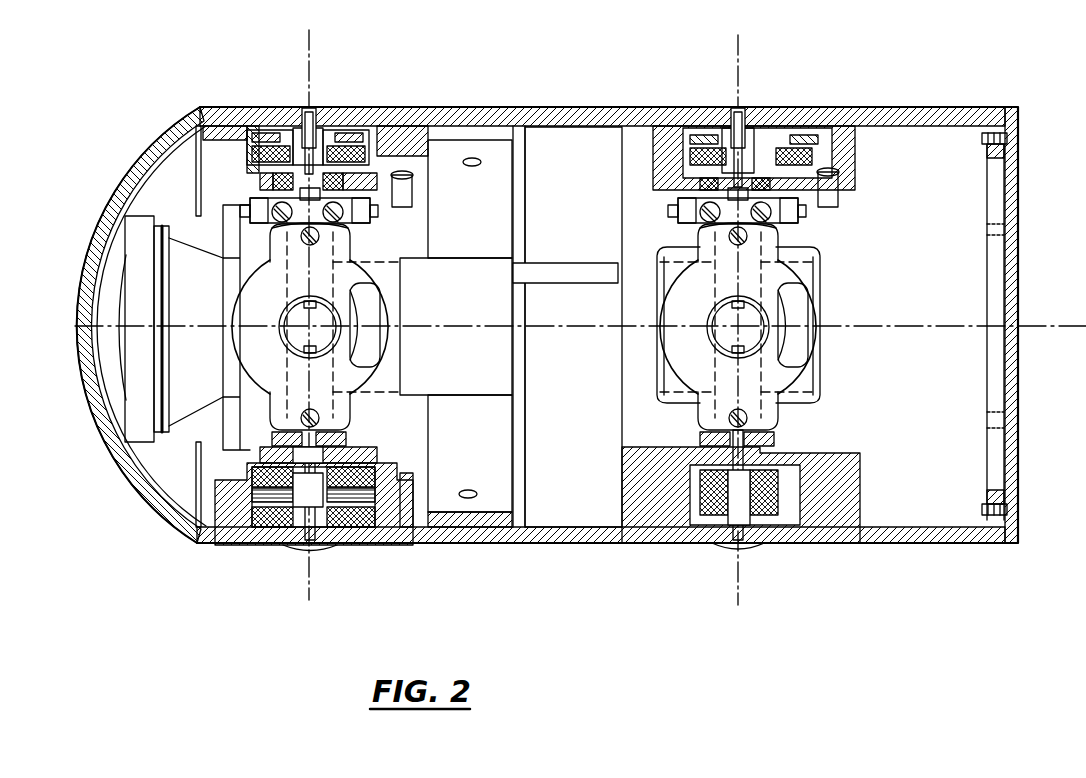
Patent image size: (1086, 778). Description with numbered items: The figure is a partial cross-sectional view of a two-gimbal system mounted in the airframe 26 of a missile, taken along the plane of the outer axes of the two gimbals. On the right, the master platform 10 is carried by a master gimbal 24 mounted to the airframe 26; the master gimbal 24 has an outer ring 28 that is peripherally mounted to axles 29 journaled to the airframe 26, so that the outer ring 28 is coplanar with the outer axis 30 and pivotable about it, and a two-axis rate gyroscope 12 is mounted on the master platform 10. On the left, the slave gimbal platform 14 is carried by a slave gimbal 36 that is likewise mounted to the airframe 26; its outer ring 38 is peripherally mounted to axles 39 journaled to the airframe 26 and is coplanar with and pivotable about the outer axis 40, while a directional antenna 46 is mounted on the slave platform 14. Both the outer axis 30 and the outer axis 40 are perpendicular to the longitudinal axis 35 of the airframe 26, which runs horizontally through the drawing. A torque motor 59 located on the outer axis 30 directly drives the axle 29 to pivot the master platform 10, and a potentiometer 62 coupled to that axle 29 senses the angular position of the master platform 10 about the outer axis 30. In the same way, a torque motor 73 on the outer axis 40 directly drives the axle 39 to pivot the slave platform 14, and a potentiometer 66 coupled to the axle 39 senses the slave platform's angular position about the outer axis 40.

The master platform 10 is at (748, 390).
The two-axis rate gyroscope 12 is at (812, 270).
The slave gimbal platform 14 is at (313, 387).
The master gimbal 24 is at (828, 295).
The airframe 26 is at (560, 105).
The outer ring 28 is at (695, 240).
The axles 29 is at (735, 105).
The outer axis 30 is at (735, 52).
The longitudinal axis 35 is at (580, 310).
The slave gimbal 36 is at (210, 210).
The outer ring 38 is at (352, 258).
The axles 39 is at (312, 108).
The outer axis 40 is at (312, 52).
The directional antenna 46 is at (483, 385).
The torque motor 59 is at (775, 536).
The potentiometer 62 is at (769, 107).
The potentiometer 66 is at (280, 118).
The torque motor 73 is at (268, 545).